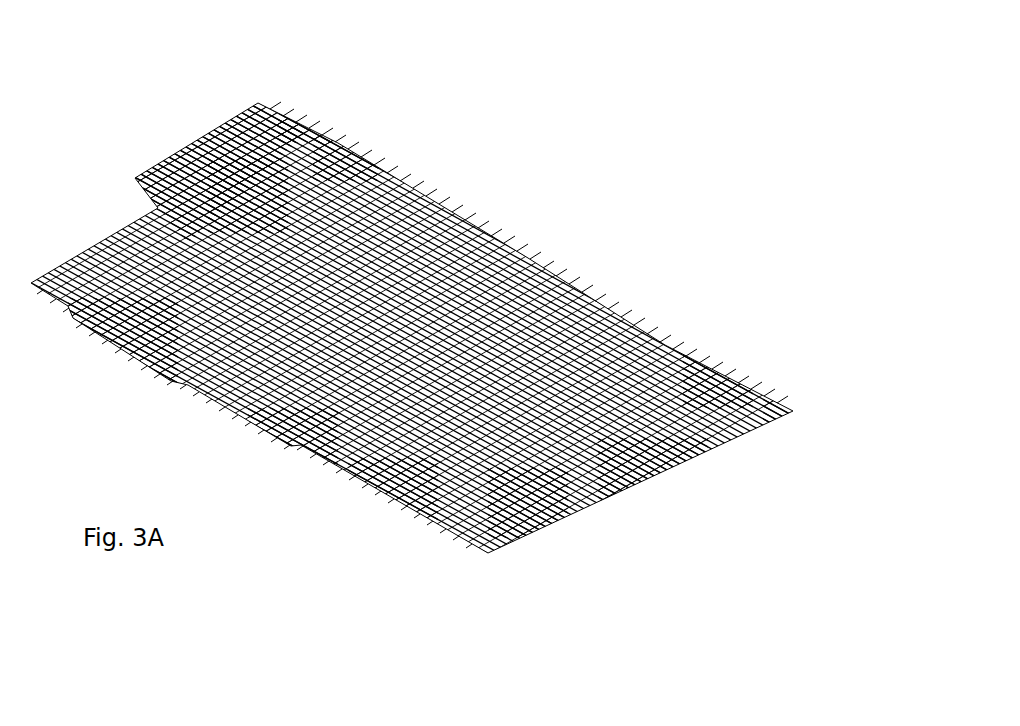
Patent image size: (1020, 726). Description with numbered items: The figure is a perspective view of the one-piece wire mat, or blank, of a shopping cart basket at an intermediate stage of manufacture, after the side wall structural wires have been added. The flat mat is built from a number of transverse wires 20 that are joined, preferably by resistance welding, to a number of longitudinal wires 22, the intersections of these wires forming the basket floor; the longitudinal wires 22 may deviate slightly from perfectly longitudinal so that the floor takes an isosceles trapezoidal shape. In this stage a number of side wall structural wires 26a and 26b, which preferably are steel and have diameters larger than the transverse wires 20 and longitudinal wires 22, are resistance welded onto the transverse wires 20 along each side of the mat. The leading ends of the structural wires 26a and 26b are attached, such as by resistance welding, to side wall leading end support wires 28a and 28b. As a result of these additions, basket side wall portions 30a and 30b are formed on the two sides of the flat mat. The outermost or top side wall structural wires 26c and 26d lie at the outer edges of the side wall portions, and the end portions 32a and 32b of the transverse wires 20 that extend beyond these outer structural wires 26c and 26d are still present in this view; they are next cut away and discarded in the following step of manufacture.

The transverse wires 20 is at (657, 337).
The longitudinal wires 22 is at (286, 438).
The side wall structural wire 26a is at (706, 366).
The side wall structural wire 26b is at (330, 142).
The outer or top side wall structural wire 26c is at (786, 377).
The outer or top side wall structural wire 26d is at (297, 106).
The side wall leading end support wire 28a is at (386, 490).
The side wall leading end support wire 28b is at (110, 333).
The basket side wall portion 30a is at (522, 497).
The basket side wall portion 30b is at (237, 205).
The end portion of the transverse wires 32a is at (640, 478).
The end portion of the transverse wires 32b is at (122, 181).